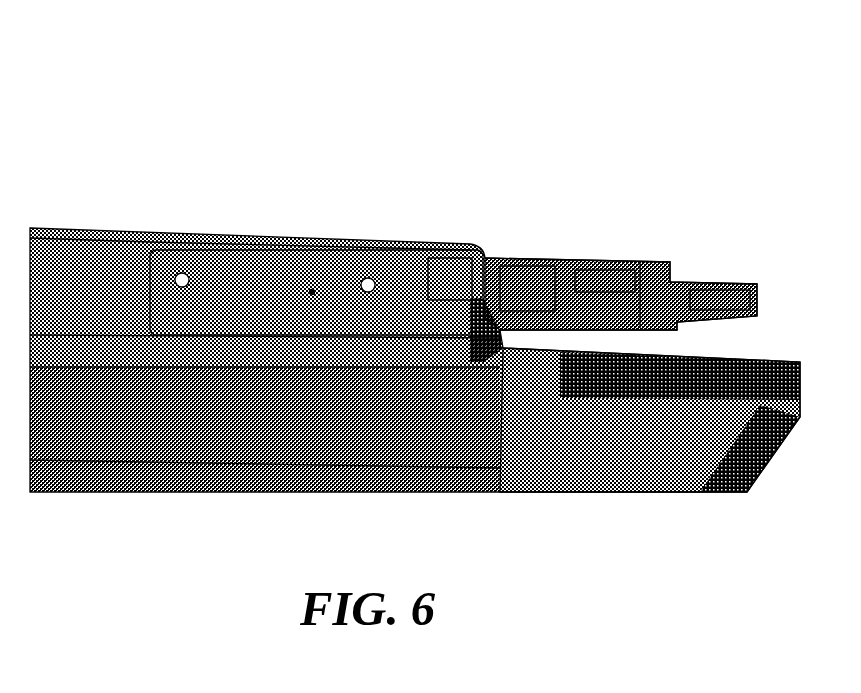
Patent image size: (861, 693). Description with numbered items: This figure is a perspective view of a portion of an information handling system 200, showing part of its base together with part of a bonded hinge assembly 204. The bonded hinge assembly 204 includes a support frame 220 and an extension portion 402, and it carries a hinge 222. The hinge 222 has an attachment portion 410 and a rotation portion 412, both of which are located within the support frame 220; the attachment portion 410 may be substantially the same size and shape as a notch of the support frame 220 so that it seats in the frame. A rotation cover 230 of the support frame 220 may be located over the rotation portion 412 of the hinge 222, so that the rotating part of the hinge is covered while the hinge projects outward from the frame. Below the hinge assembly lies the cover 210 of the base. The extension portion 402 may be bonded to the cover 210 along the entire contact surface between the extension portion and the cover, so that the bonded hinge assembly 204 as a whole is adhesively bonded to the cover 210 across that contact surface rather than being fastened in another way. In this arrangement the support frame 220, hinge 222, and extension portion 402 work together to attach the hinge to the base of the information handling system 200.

The information handling system 200 is at (508, 92).
The support frame 220 is at (80, 270).
The bonded hinge assembly 204 is at (265, 240).
The attachment portion 410 is at (312, 290).
The rotation portion 412 is at (445, 275).
The rotation cover 230 is at (450, 297).
The hinge 222 is at (645, 250).
The cover 210 is at (438, 473).
The extension portion 402 is at (628, 472).